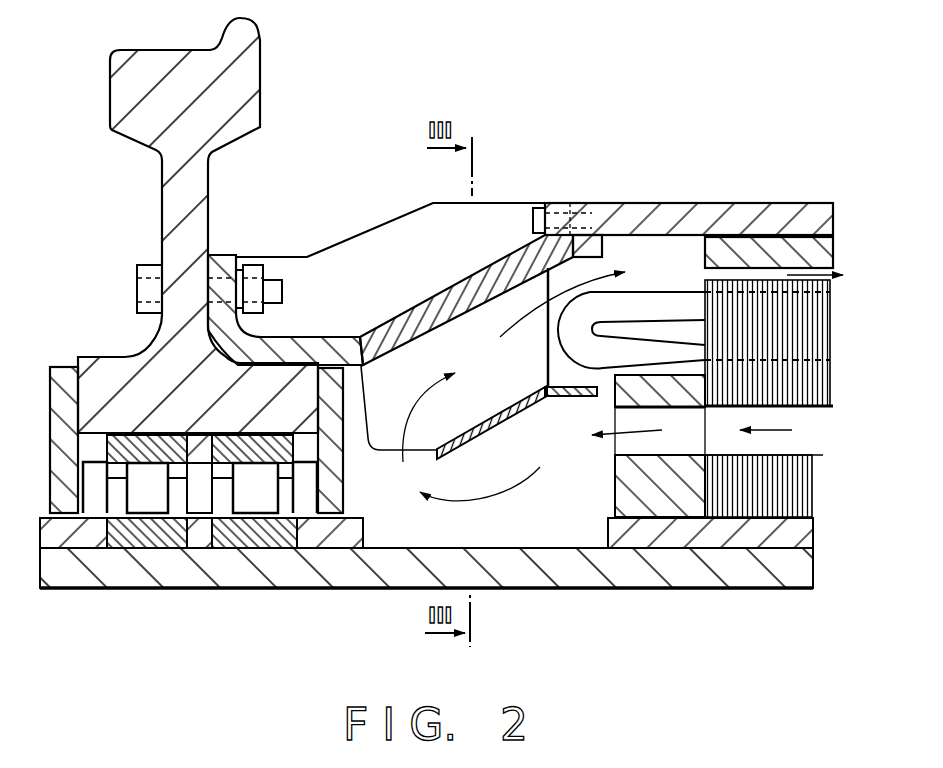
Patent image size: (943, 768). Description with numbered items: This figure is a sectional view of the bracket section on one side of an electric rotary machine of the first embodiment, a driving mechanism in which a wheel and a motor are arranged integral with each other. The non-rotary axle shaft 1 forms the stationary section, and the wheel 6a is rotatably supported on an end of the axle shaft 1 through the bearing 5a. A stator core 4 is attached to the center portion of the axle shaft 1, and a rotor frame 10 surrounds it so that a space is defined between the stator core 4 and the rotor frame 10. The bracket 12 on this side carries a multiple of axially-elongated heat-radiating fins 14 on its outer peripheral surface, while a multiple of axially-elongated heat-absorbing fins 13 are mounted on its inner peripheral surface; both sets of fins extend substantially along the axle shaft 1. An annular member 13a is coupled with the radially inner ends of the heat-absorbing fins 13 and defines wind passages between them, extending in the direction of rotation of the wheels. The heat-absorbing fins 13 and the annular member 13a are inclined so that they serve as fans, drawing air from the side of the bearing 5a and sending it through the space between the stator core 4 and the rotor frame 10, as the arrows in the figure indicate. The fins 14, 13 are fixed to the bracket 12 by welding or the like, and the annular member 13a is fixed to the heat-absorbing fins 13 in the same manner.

The wheel 6a is at (150, 58).
The heat-radiating fins 14 is at (392, 228).
The bracket 12 is at (373, 337).
The heat-absorbing fins 13 is at (498, 390).
The annular member 13a is at (563, 398).
The rotor frame 10 is at (680, 203).
The stator core 4 is at (757, 298).
The bearing 5a is at (257, 498).
The axle shaft 1 is at (346, 573).